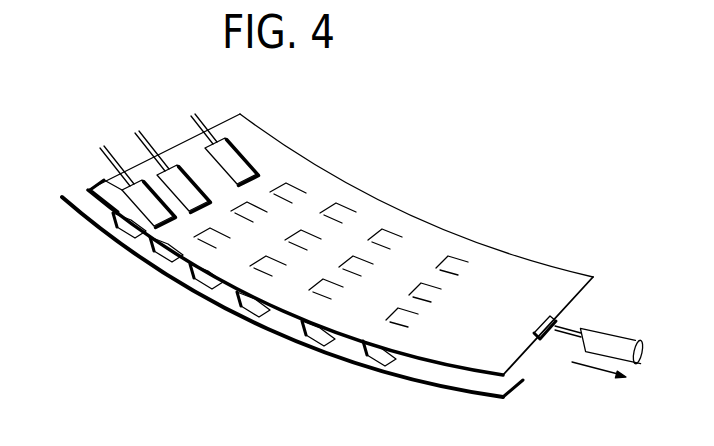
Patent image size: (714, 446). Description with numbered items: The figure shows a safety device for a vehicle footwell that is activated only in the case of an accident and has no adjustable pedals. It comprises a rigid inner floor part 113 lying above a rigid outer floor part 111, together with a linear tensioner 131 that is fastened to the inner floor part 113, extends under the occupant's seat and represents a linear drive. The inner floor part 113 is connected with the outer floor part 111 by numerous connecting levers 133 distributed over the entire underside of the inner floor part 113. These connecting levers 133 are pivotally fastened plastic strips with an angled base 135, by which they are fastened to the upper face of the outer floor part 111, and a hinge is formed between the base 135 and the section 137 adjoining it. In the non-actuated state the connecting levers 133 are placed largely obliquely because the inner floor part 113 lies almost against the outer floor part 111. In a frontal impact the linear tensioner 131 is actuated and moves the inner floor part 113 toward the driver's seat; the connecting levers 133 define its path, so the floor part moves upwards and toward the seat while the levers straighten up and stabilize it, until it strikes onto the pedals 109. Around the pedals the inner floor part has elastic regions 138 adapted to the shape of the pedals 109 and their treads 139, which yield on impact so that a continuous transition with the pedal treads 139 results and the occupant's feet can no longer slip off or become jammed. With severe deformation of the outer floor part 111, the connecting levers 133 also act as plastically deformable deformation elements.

The pedals 109 is at (216, 149).
The pedal treads 139 is at (249, 166).
The elastic regions 138 is at (99, 185).
The rigid inner floor part 113 is at (515, 282).
The connecting levers 133 is at (311, 349).
The angled base 135 is at (257, 317).
The section adjoining the base 137 is at (229, 299).
The rigid outer floor part 111 is at (437, 388).
The linear tensioner 131 is at (621, 347).